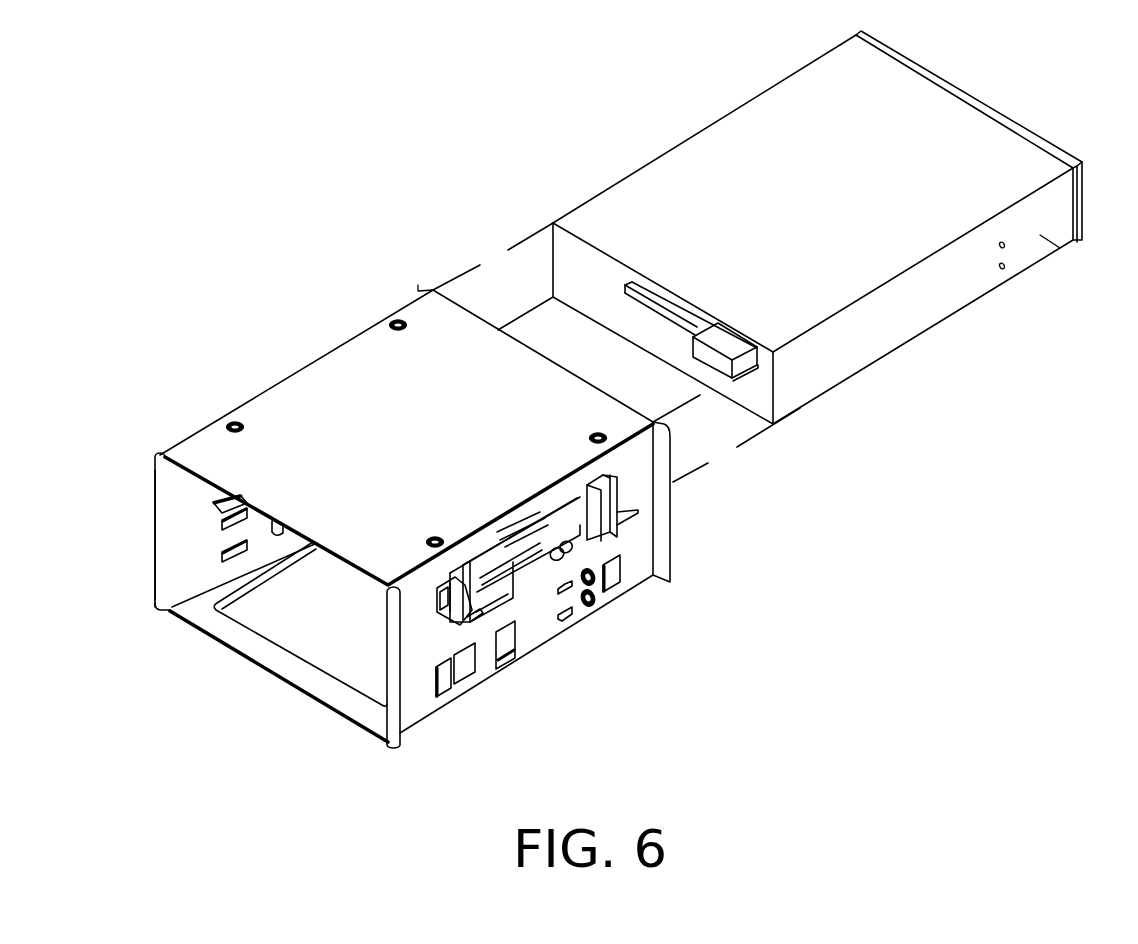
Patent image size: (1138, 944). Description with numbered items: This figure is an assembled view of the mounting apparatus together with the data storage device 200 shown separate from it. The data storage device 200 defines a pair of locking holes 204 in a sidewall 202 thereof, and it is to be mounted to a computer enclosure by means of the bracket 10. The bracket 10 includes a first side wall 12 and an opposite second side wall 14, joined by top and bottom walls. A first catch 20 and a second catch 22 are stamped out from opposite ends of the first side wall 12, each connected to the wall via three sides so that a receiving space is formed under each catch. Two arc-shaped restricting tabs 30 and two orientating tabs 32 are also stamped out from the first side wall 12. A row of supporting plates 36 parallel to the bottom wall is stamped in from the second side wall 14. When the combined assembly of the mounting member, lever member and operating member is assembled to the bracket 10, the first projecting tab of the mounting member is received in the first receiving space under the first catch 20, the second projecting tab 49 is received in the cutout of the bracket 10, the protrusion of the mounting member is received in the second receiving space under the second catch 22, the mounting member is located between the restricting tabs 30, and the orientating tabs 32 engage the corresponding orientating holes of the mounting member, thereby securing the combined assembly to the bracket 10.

The bracket 10 is at (303, 353).
The first side wall 12 is at (413, 698).
The second side wall 14 is at (170, 568).
The first catch 20 is at (450, 590).
The second catch 22 is at (617, 498).
The restricting tabs 30 is at (493, 537).
The orientating tabs 32 is at (590, 530).
The supporting plates 36 is at (217, 502).
The second projecting tab 49 is at (470, 617).
The data storage device 200 is at (667, 131).
The sidewall 202 is at (1035, 233).
The locking holes 204 is at (1007, 267).